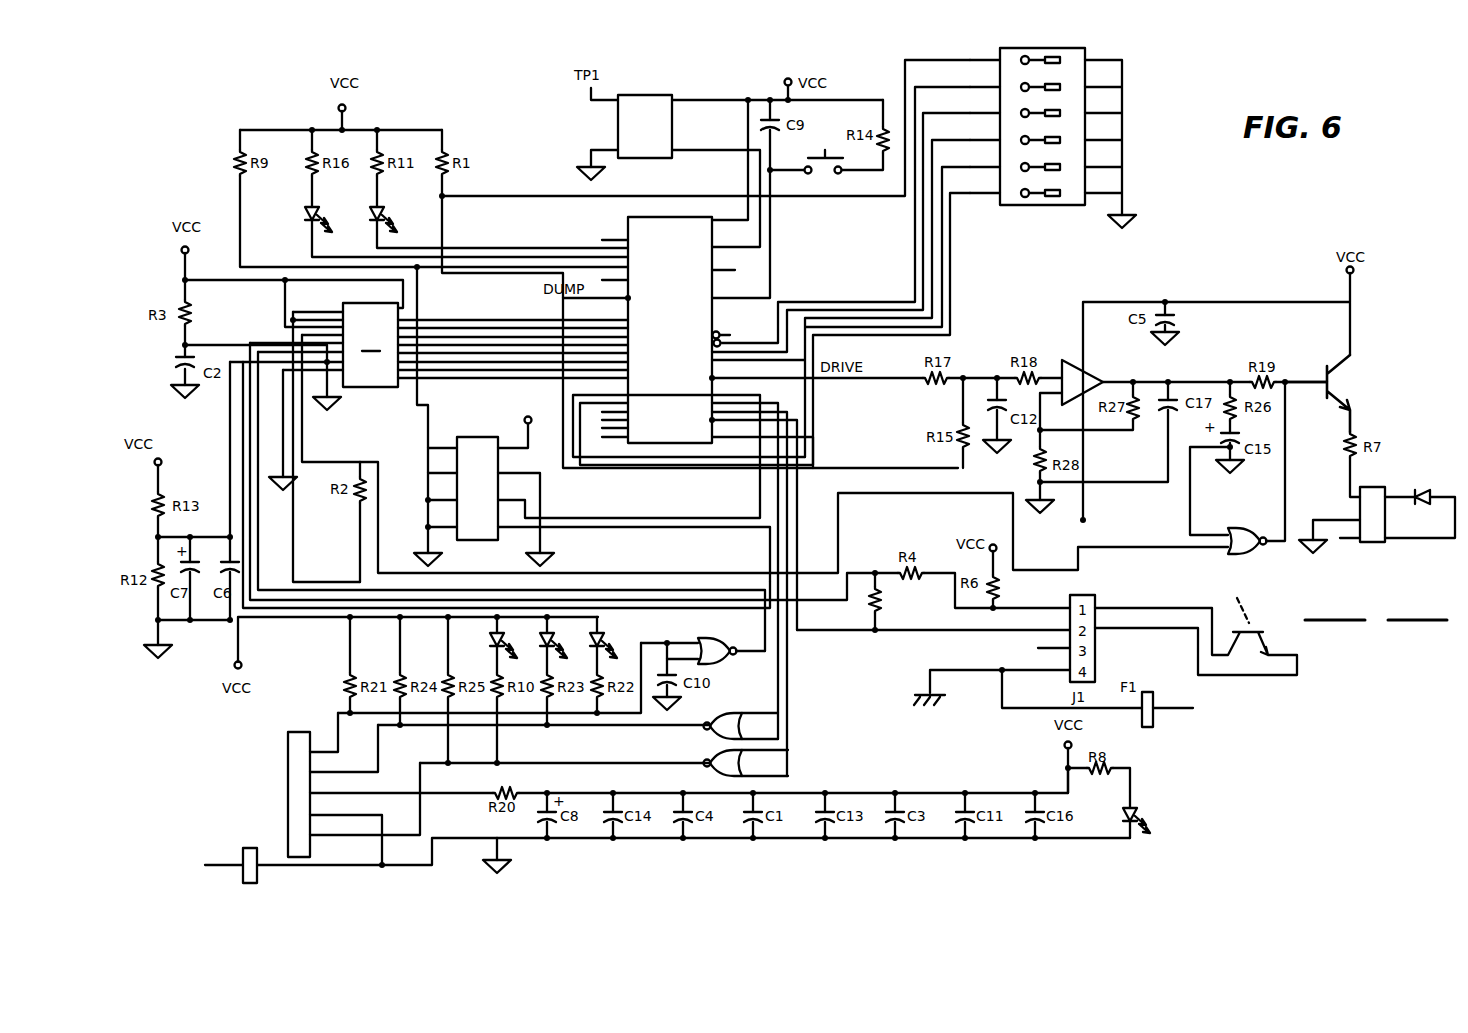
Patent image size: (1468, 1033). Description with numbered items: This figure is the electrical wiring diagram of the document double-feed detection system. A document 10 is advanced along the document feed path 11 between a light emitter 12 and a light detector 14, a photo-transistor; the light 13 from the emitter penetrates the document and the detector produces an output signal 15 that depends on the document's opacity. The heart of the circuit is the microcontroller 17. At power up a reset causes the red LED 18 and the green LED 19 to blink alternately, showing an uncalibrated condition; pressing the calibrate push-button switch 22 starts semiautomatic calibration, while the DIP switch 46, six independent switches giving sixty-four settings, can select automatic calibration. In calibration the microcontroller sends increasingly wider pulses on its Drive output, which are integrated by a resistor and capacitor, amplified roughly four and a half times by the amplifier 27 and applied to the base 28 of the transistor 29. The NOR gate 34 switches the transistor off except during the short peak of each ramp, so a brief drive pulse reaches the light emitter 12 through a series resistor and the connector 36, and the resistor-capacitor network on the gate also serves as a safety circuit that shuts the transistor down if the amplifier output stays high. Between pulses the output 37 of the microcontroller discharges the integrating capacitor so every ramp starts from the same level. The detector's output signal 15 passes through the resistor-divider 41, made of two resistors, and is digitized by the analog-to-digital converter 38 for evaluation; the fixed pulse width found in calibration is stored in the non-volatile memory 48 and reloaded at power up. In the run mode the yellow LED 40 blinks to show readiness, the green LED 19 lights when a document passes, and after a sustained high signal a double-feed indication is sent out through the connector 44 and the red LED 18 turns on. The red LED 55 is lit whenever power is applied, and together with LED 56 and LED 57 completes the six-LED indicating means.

The document 10 is at (1412, 618).
The document feed path 11 is at (1295, 620).
The light emitter 12 is at (1422, 492).
The light 13 is at (1252, 618).
The light detector 14 is at (1248, 650).
The output signal 15 is at (1141, 596).
The microcontroller 17 is at (654, 217).
The red LED 18 is at (502, 630).
The green LED 19 is at (371, 206).
The calibrate push-button switch 22 is at (840, 170).
The amplifier 27 is at (1066, 358).
The base 28 is at (1329, 367).
The transistor 29 is at (1383, 363).
The NOR gate 34 is at (1263, 559).
The connector 36 is at (1370, 558).
The output 37 is at (608, 301).
The analog-to-digital converter 38 is at (429, 345).
The yellow LED 40 is at (306, 215).
The resistor-divider 41 is at (863, 634).
The connector 44 is at (288, 762).
The switch 46 is at (1007, 207).
The non-volatile memory 48 is at (472, 437).
The red LED 55 is at (1133, 808).
The LED 56 is at (625, 639).
The LED 57 is at (603, 634).